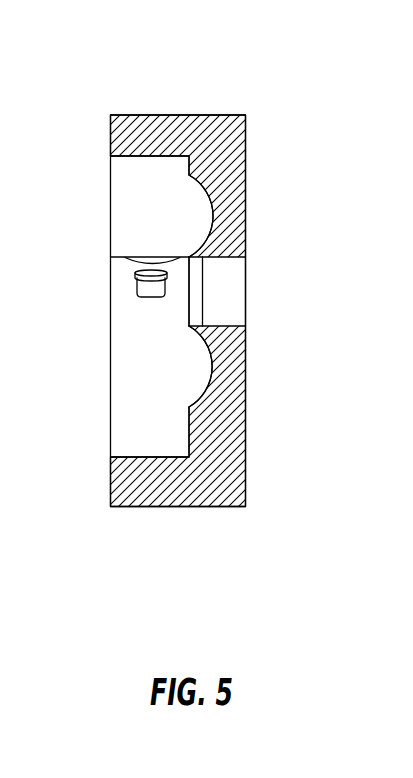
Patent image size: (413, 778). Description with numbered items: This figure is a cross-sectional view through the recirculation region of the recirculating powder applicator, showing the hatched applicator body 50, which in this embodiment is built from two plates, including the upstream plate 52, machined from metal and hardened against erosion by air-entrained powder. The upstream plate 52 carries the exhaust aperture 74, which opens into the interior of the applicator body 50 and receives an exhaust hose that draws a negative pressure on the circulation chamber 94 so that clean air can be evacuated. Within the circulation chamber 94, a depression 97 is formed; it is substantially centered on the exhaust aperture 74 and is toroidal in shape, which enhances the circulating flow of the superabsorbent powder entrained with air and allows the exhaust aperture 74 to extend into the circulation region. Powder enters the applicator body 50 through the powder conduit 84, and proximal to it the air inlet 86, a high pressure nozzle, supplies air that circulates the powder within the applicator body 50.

The applicator body 50 is at (75, 127).
The upstream plate 52 is at (247, 152).
The exhaust aperture 74 is at (223, 260).
The powder conduit 84 is at (137, 257).
The air inlet 86 is at (140, 295).
The circulation chamber 94 is at (149, 457).
The depression 97 is at (212, 200).